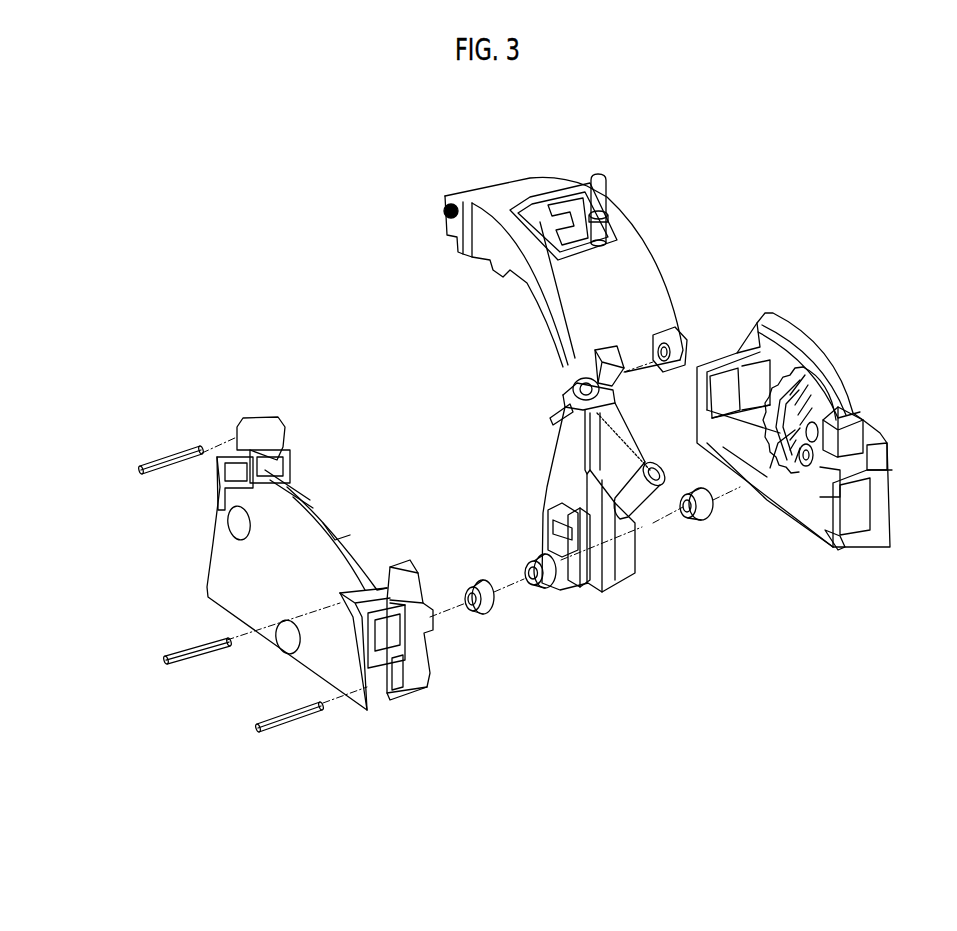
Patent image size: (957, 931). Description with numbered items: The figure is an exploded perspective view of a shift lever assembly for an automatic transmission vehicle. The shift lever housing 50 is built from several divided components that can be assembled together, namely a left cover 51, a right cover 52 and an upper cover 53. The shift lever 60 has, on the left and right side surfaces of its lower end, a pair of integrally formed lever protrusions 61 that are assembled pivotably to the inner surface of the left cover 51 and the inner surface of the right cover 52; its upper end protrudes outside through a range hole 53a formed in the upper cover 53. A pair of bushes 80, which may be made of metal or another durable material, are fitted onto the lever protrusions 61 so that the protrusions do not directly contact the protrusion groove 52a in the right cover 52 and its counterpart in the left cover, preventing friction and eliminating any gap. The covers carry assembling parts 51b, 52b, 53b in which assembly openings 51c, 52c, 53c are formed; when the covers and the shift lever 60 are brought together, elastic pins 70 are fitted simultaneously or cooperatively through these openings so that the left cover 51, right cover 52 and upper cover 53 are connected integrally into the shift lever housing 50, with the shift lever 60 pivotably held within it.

The shift lever housing 50 is at (664, 275).
The left cover 51 is at (233, 570).
The assembling part 51b is at (408, 571).
The assembly opening 51c is at (234, 425).
The right cover 52 is at (840, 392).
The protrusion groove 52a is at (803, 460).
The assembling part 52b is at (837, 427).
The assembly opening 52c is at (880, 441).
The upper cover 53 is at (643, 253).
The range hole 53a is at (568, 195).
The assembling part 53b is at (603, 355).
The assembly opening 53c is at (572, 384).
The shift lever 60 is at (606, 180).
The lever protrusion 61 is at (528, 557).
The elastic pin 70 is at (162, 458).
The bush 80 is at (490, 618).